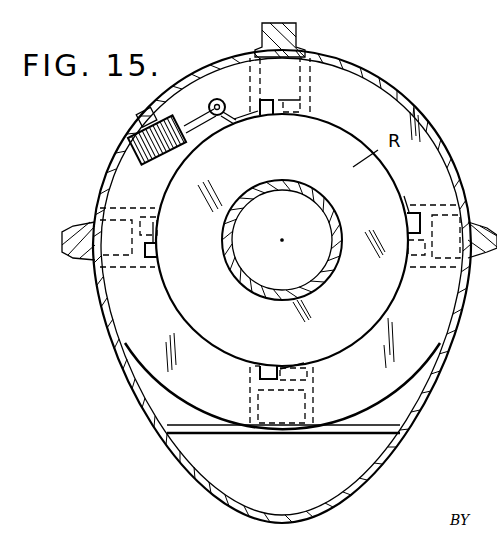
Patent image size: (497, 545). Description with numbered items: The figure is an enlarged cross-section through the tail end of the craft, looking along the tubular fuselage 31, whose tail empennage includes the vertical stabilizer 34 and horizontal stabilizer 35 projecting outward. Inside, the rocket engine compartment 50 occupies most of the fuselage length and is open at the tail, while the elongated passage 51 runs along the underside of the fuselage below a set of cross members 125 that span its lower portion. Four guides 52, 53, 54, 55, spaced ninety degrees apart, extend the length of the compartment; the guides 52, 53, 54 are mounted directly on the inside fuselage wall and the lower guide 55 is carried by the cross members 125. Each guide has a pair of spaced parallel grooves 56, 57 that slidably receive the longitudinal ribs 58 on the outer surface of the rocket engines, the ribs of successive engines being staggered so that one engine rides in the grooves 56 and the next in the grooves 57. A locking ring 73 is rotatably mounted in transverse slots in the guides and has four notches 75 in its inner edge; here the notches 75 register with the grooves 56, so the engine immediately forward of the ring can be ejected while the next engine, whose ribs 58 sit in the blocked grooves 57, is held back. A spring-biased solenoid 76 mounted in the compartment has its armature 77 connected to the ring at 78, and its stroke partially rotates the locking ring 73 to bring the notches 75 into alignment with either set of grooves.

The fuselage 31 is at (398, 90).
The vertical stabilizer 34 is at (298, 32).
The horizontal stabilizer 35 is at (70, 226).
The rocket engine compartment 50 is at (427, 138).
The passage 51 is at (258, 490).
The guide 52 is at (313, 97).
The guide 53 is at (126, 272).
The guide 54 is at (437, 268).
The guide 55 is at (310, 404).
The groove 56 is at (258, 371).
The groove 57 is at (314, 377).
The longitudinal rib 58 is at (266, 116).
The locking ring 73 is at (408, 352).
The notch 75 is at (238, 122).
The solenoid 76 is at (150, 163).
The armature 77 is at (185, 117).
The connection 78 is at (224, 101).
The cross member 125 is at (336, 433).